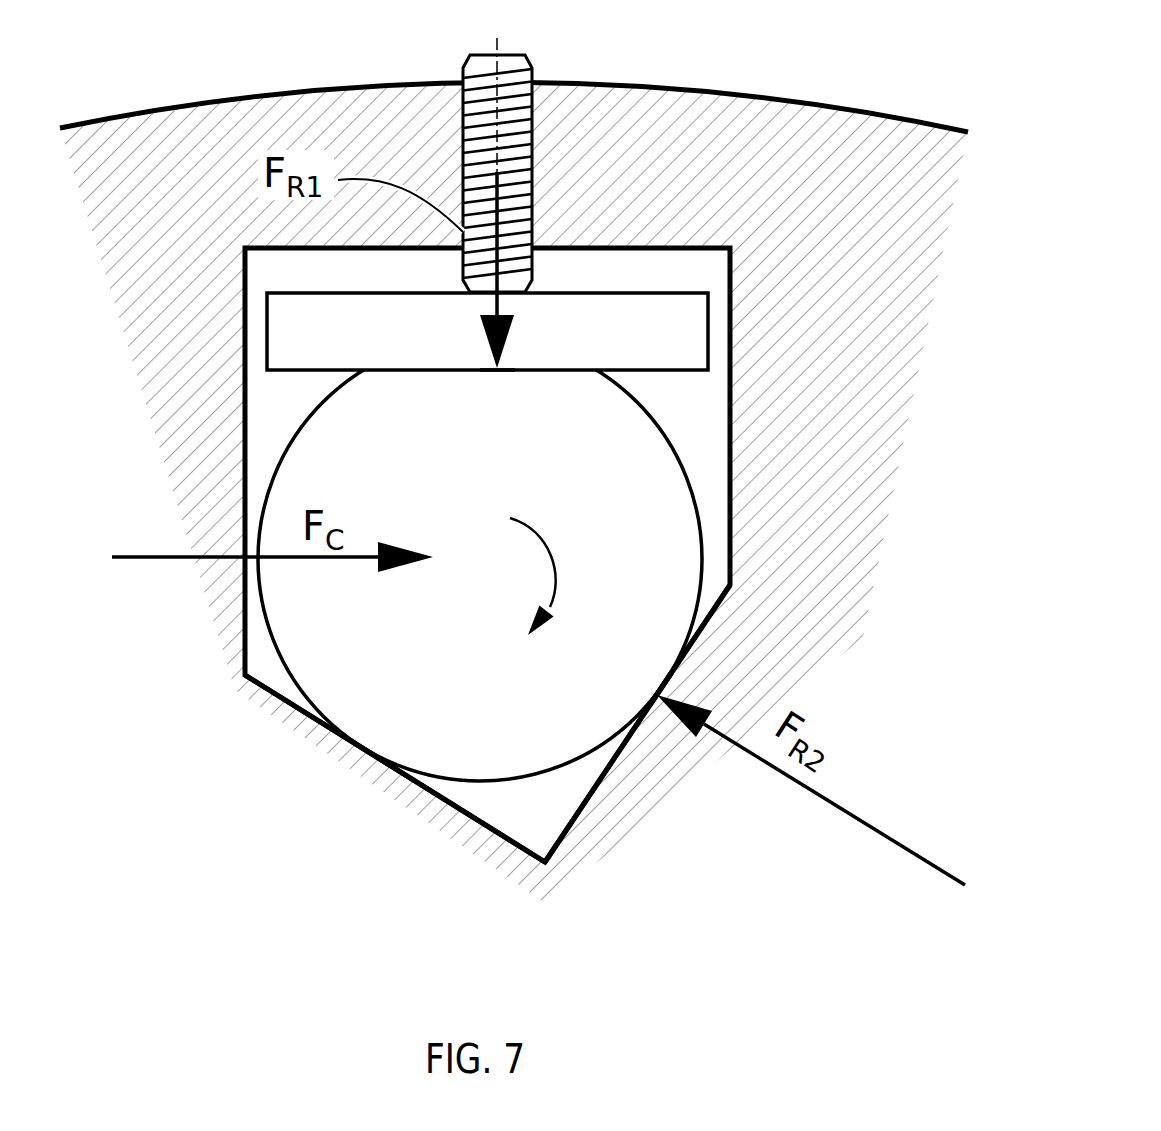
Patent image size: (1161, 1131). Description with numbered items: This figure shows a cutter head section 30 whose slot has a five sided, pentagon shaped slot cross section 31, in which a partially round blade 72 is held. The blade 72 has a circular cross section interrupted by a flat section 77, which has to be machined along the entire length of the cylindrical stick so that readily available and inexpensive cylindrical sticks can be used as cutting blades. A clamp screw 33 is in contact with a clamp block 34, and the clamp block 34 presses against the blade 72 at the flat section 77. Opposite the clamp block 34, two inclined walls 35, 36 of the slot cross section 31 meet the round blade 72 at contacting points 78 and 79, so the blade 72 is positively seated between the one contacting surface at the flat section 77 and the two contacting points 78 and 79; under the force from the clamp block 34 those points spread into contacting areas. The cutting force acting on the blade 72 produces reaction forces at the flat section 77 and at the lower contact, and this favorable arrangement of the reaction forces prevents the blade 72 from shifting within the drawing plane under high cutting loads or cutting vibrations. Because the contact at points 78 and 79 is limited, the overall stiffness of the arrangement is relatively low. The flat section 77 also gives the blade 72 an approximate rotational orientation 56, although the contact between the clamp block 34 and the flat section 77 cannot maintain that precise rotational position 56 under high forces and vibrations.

The cutter head section 30 is at (727, 90).
The five sided slot cross section 31 is at (695, 407).
The clamp screw 33 is at (522, 177).
The clamp block 34 is at (647, 322).
The first inclined pocket wall 35 is at (598, 800).
The second inclined pocket wall 36 is at (442, 797).
The rotational orientation 56 is at (561, 576).
The partially round blade 72 is at (675, 552).
The flat section 77 is at (493, 373).
The contacting point 78 is at (662, 697).
The contacting point 79 is at (368, 750).